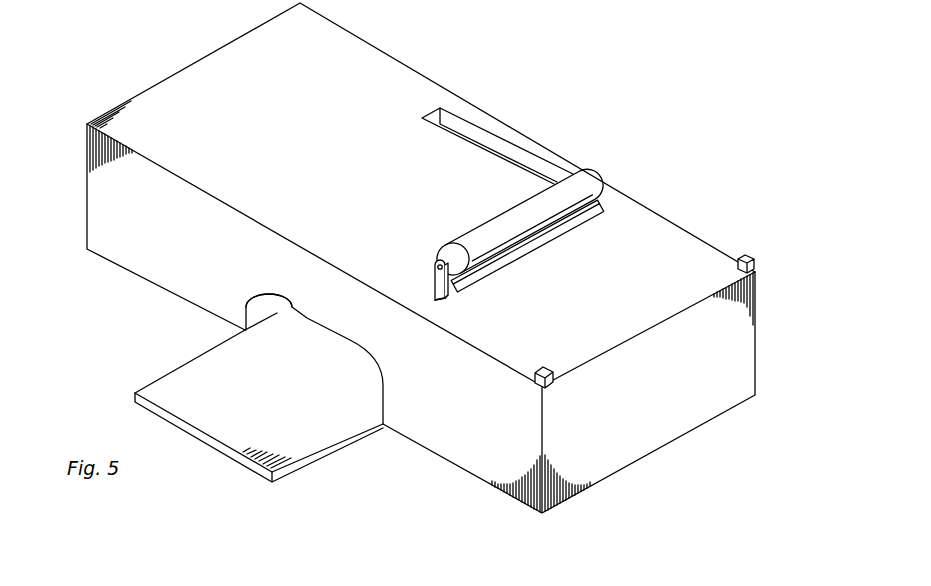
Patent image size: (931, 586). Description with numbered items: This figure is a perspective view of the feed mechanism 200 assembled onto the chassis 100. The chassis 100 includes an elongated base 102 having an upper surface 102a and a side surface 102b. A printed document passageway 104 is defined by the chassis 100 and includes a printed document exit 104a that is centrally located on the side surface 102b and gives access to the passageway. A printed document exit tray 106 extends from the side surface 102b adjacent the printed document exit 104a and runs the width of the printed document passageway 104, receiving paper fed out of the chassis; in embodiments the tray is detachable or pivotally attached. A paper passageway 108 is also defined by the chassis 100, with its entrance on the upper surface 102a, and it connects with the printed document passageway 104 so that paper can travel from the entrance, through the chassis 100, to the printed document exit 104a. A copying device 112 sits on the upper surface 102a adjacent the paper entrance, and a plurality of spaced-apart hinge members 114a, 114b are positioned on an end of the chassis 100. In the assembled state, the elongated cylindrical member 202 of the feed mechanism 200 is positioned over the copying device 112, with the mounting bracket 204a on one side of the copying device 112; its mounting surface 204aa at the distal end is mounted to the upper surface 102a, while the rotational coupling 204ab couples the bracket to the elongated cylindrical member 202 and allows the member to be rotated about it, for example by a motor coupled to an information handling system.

The chassis 100 is at (598, 54).
The elongated base 102 is at (636, 444).
The upper surface 102a is at (234, 54).
The side surface 102b is at (92, 188).
The printed document passageway 104 is at (330, 356).
The printed document exit 104a is at (293, 302).
The printed document exit tray 106 is at (180, 378).
The paper passageway 108 is at (483, 130).
The copying device 112 is at (533, 252).
The hinge member 114a is at (546, 367).
The hinge member 114b is at (747, 256).
The feed mechanism 200 is at (617, 151).
The elongated cylindrical member 202 is at (464, 230).
The mounting bracket 204a is at (440, 280).
The mounting surface 204aa is at (437, 298).
The rotational coupling 204ab is at (437, 262).